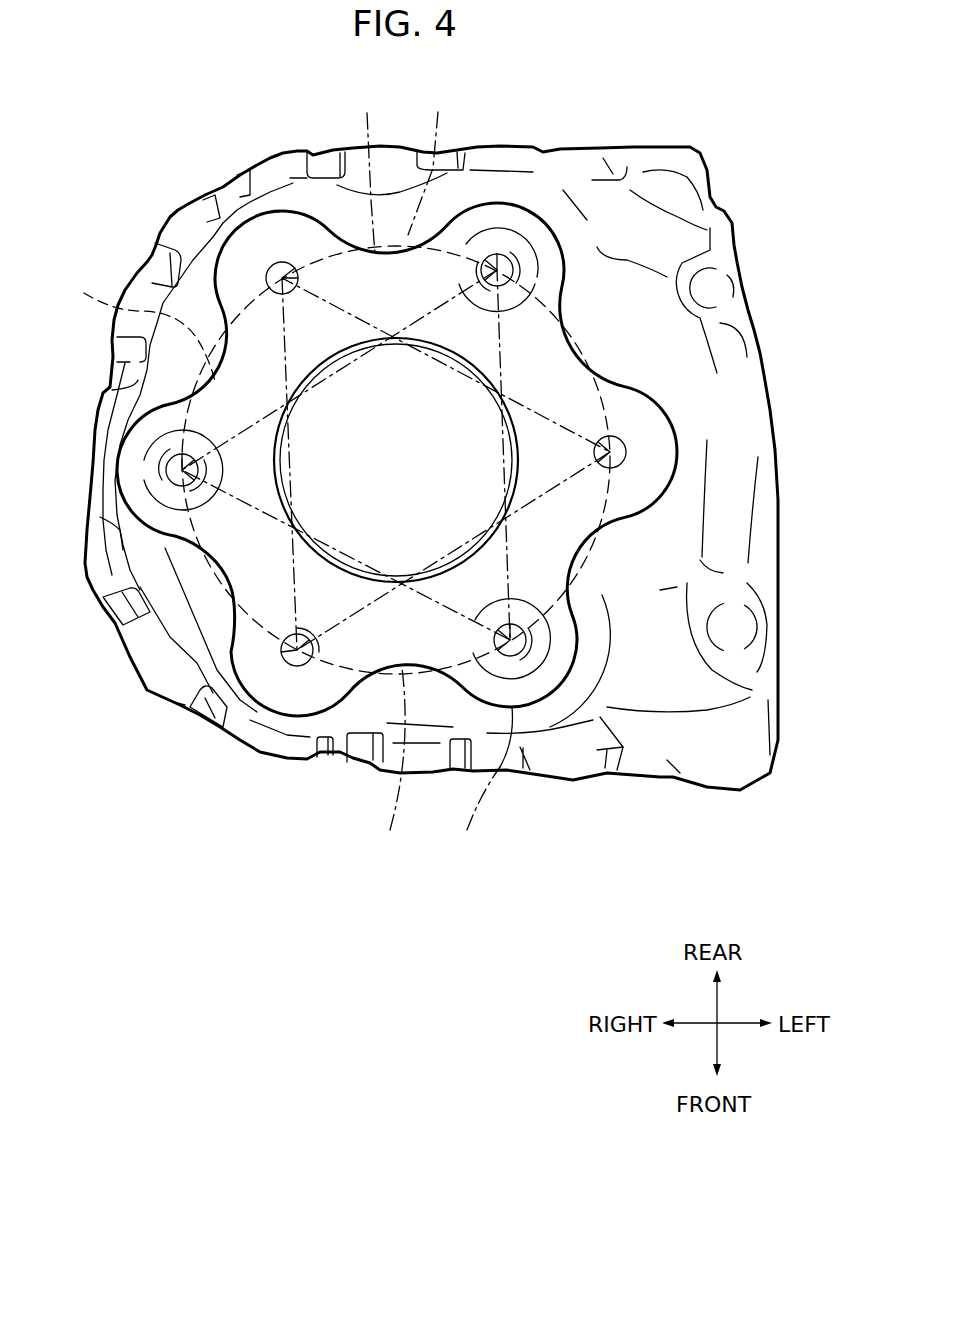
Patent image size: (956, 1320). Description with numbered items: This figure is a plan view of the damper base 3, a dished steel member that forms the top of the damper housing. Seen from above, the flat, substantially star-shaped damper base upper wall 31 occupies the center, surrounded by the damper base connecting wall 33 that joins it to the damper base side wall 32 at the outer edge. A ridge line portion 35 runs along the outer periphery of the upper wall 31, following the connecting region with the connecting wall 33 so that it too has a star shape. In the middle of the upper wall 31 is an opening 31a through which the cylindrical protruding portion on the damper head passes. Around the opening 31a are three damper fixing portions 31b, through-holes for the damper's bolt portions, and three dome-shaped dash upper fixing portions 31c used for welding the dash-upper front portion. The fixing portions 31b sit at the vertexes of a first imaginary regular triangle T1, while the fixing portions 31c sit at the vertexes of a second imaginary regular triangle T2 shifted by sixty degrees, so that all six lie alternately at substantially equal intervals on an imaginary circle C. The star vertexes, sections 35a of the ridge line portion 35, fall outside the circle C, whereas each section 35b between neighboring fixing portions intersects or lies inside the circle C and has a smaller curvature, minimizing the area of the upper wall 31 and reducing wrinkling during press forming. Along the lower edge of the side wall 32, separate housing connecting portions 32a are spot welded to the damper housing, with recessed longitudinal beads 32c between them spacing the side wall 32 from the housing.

The damper base 3 is at (170, 207).
The damper base upper wall 31 is at (122, 364).
The opening 31a is at (330, 372).
The damper fixing portions 31b is at (282, 262).
The dash upper fixing portions 31c is at (517, 258).
The damper base side wall 32 is at (97, 430).
The housing connecting portions 32a is at (147, 687).
The longitudinal beads 32c is at (130, 612).
The damper base connecting wall 33 is at (120, 563).
The ridge line portion 35 is at (437, 787).
The sections of the ridge line portion 35a is at (482, 785).
The section of the ridge line portion 35b is at (395, 765).
The imaginary circle C is at (343, 460).
The first imaginary regular triangle T1 is at (376, 171).
The second imaginary regular triangle T2 is at (429, 161).